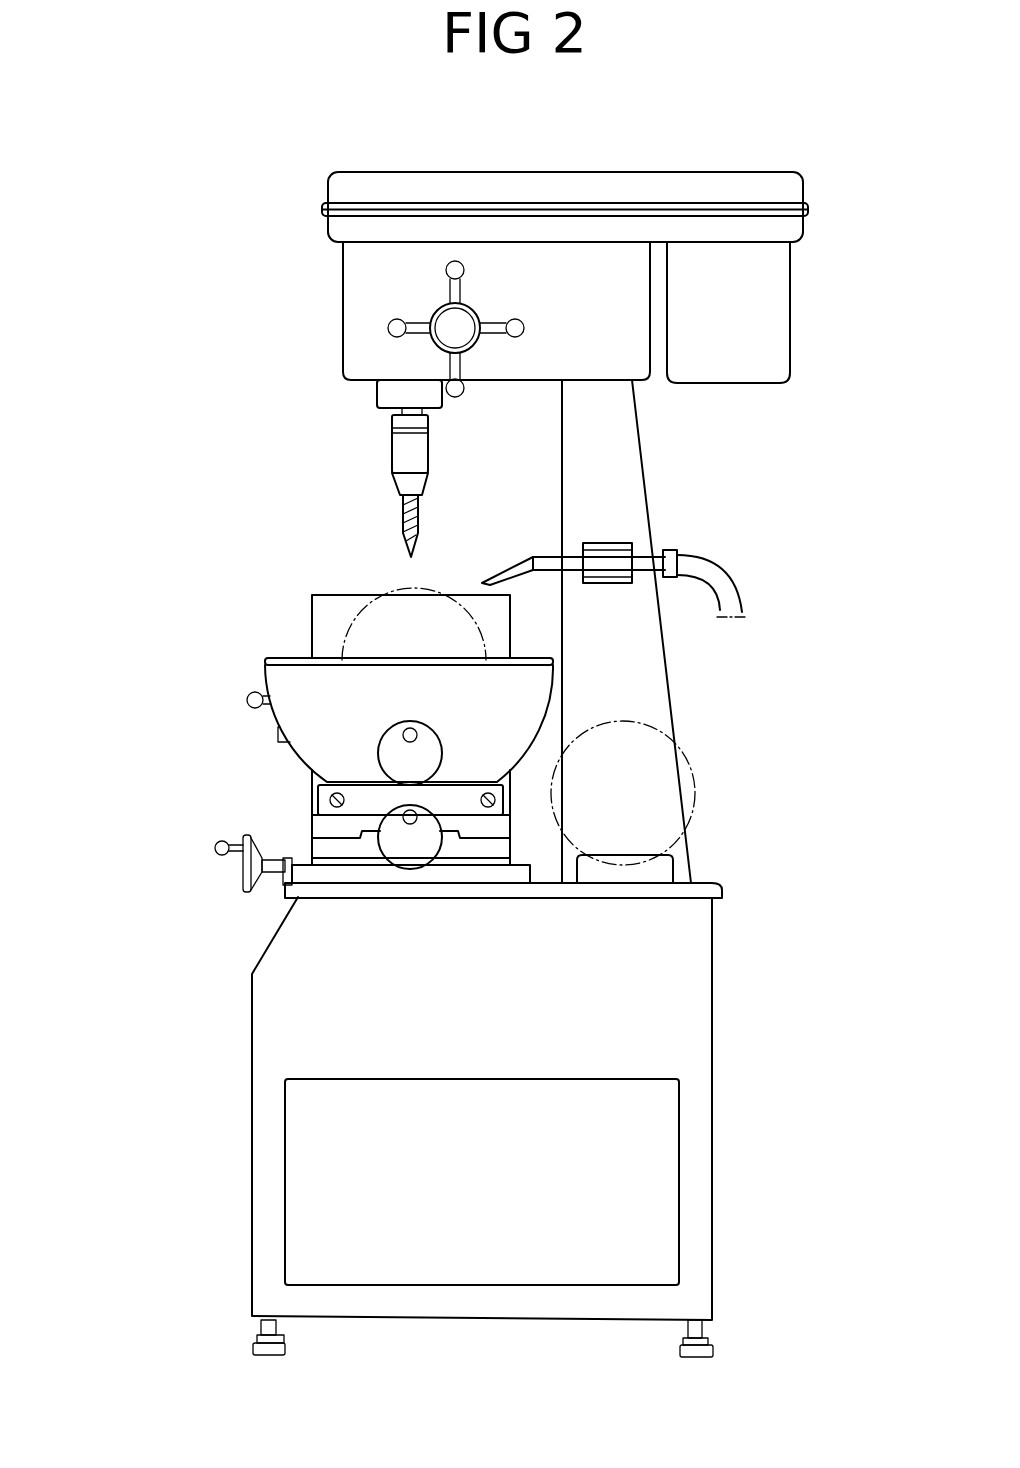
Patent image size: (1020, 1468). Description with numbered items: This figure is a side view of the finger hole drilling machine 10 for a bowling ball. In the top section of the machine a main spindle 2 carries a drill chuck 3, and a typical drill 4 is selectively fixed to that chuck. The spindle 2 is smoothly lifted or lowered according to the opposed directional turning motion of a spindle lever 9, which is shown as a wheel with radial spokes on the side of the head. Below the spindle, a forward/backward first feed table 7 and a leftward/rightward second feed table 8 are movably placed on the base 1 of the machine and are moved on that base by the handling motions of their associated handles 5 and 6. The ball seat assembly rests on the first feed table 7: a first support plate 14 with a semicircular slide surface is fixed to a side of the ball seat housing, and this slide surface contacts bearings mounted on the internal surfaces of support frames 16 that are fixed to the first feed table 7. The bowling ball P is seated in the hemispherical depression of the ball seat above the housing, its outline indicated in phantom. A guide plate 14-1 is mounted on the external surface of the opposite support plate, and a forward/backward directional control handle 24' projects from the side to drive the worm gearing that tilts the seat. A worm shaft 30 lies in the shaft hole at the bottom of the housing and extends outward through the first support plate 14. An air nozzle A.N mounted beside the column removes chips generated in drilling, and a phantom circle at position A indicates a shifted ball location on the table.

The base 1 is at (695, 1000).
The main spindle 2 is at (377, 392).
The drill chuck 3 is at (392, 450).
The drill 4 is at (403, 518).
The handle 5 is at (415, 860).
The handle 6 is at (217, 850).
The first feed table 7 is at (500, 850).
The second feed table 8 is at (507, 877).
The spindle lever 9 is at (388, 328).
The finger hole drilling machine 10 is at (190, 435).
The first support plate 14 is at (542, 683).
The guide plate 14-1 is at (330, 628).
The support frame 16 is at (323, 800).
The forward/backward directional control handle 24' is at (228, 707).
The worm shaft 30 is at (433, 755).
The bowling ball P is at (368, 618).
The position A is at (658, 867).
The air nozzle A.N is at (648, 557).